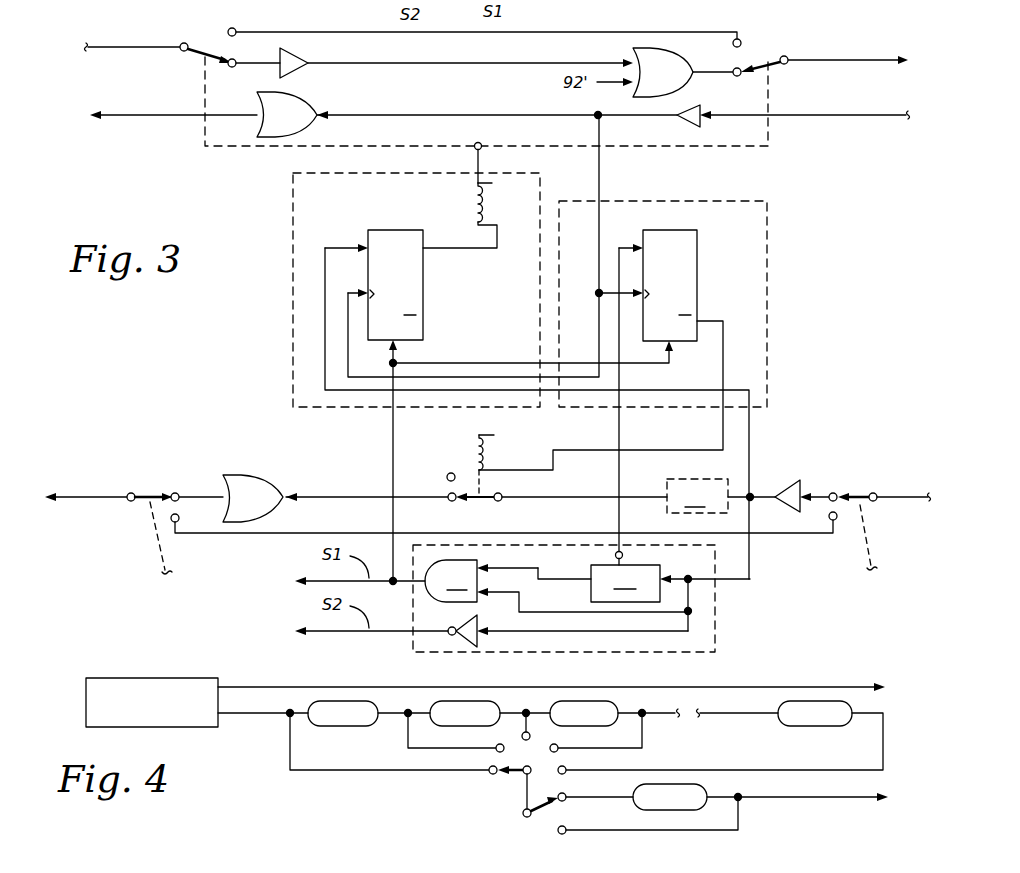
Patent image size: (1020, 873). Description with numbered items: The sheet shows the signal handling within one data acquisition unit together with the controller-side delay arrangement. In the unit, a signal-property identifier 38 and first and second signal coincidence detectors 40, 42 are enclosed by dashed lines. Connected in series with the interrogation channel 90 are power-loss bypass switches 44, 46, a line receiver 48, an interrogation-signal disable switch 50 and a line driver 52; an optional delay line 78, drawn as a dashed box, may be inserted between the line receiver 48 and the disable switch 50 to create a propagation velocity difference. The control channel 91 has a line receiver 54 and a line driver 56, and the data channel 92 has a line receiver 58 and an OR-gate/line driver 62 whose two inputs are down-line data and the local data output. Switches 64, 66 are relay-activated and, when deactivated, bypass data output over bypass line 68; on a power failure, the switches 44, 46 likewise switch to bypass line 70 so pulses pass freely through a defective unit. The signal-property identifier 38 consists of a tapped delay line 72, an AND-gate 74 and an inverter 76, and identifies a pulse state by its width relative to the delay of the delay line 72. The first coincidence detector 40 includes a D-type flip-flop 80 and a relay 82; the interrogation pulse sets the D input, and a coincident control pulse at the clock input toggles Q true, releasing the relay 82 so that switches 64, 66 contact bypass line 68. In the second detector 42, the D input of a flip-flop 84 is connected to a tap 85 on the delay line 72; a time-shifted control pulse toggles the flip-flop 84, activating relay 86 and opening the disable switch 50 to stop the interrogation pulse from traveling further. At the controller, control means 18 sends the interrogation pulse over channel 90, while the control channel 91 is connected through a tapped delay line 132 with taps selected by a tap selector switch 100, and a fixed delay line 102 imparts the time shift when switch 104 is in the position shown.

In FIG. 4, the control means 18 is at (143, 695).
In FIG. 3, the signal-property identifier 38 is at (708, 630).
In FIG. 3, the first signal coincidence detector 40 is at (330, 212).
In FIG. 3, the second signal coincidence detector 42 is at (747, 232).
In FIG. 3, the power-loss bypass switch 44 is at (857, 494).
In FIG. 3, the power-loss bypass switch 46 is at (146, 492).
In FIG. 3, the line receiver 48 is at (789, 479).
In FIG. 3, the interrogation-signal disable switch 50 is at (472, 500).
In FIG. 3, the line driver 52 is at (250, 475).
In FIG. 3, the line receiver 54 is at (706, 105).
In FIG. 3, the line driver 56 is at (296, 125).
In FIG. 3, the line receiver 58 is at (302, 58).
In FIG. 3, the OR-gate/line driver 62 is at (671, 82).
In FIG. 3, the switch 64 is at (200, 44).
In FIG. 3, the switch 66 is at (770, 54).
In FIG. 3, the bypass line 68 is at (297, 30).
In FIG. 3, the bypass line 70 is at (218, 535).
In FIG. 3, the tapped delay line 72 is at (670, 598).
In FIG. 3, the AND-gate 74 is at (491, 586).
In FIG. 3, the inverter 76 is at (452, 624).
In FIG. 3, the delay line 78 is at (721, 496).
In FIG. 3, the D-type flip-flop 80 is at (425, 274).
In FIG. 3, the relay 82 is at (474, 208).
In FIG. 3, the flip-flop 84 is at (692, 272).
In FIG. 3, the tap 85 is at (614, 555).
In FIG. 3, the relay 86 is at (474, 450).
In FIG. 3, the interrogation channel 90 is at (902, 492).
In FIG. 4, the interrogation channel 90 is at (840, 683).
In FIG. 3, the control channel 91 is at (869, 112).
In FIG. 4, the control channel 91 is at (781, 800).
In FIG. 3, the data channel 92 is at (120, 44).
In FIG. 4, the tap selector switch 100 is at (512, 776).
In FIG. 4, the fixed delay line 102 is at (662, 782).
In FIG. 4, the switch 104 is at (522, 808).
In FIG. 4, the tapped delay line 132 is at (328, 676).